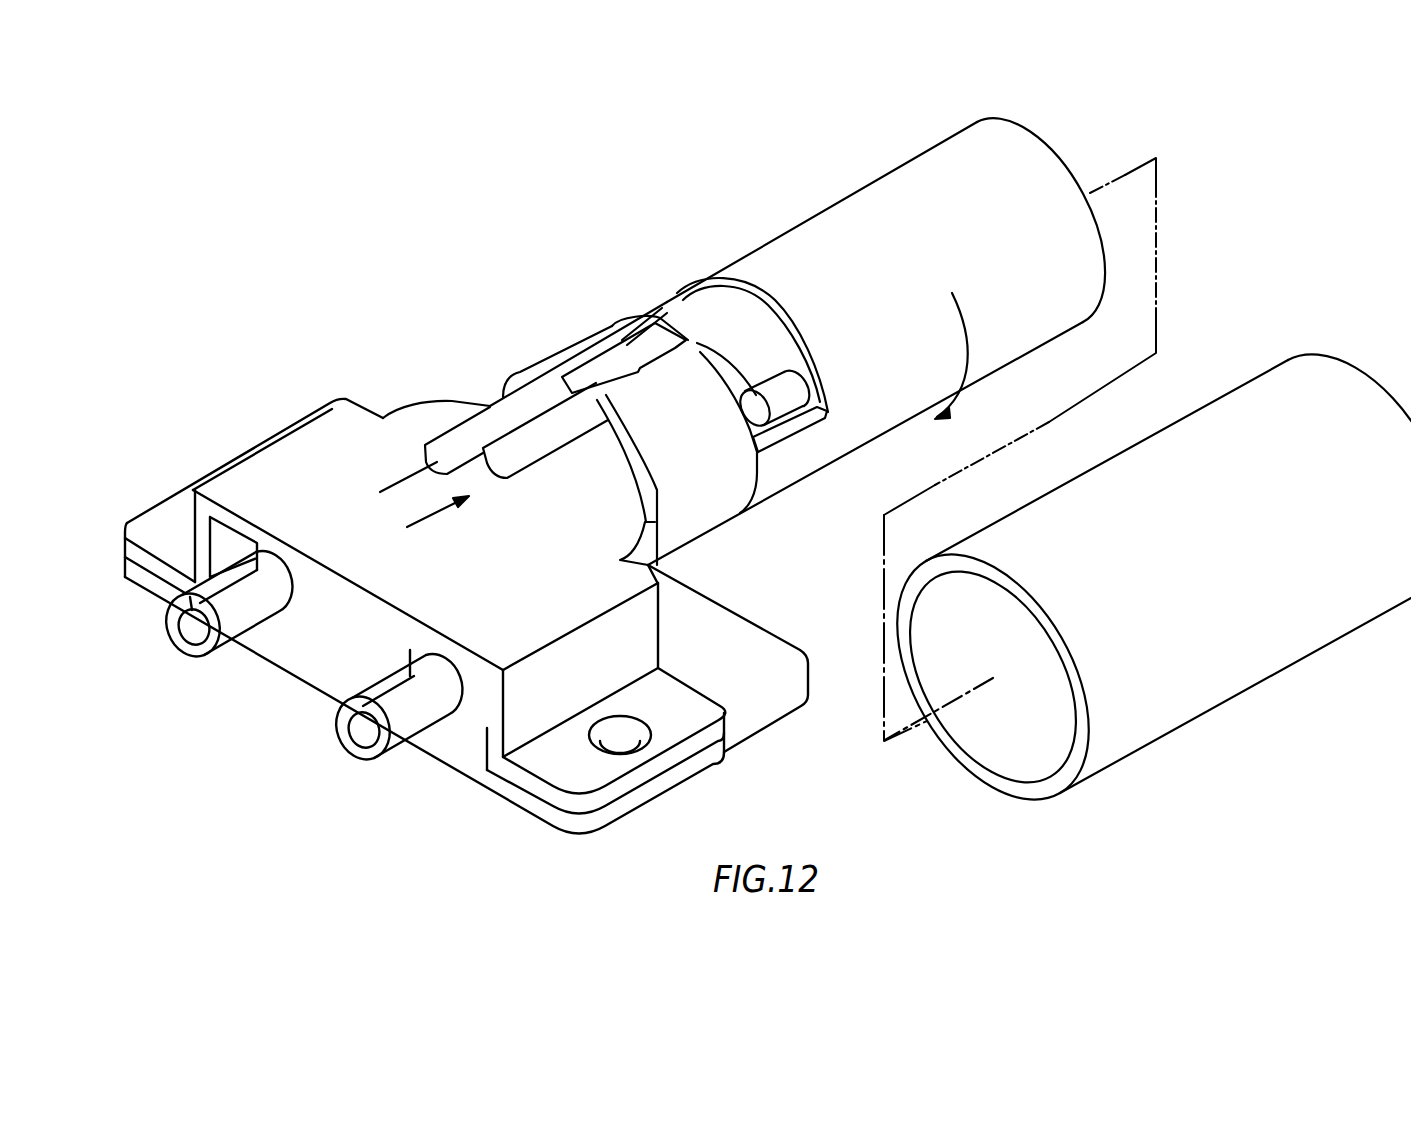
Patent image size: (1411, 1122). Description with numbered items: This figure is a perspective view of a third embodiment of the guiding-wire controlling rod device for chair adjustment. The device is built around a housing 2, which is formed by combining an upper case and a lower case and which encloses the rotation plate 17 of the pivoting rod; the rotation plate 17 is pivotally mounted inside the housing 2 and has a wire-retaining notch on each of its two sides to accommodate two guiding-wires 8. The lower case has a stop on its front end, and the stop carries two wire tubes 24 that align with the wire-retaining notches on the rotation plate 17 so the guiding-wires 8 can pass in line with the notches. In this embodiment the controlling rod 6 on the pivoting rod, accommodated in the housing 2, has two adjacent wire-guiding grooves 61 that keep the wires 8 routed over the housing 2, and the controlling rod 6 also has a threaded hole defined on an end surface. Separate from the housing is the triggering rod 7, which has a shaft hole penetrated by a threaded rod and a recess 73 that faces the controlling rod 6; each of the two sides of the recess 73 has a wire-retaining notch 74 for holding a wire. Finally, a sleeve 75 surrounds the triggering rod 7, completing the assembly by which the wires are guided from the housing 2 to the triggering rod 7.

The housing 2 is at (341, 429).
The controlling rod 6 is at (559, 361).
The triggering rod 7 is at (887, 149).
The guiding-wires 8 is at (393, 490).
The rotation plate 17 is at (657, 582).
The wire tubes 24 is at (250, 628).
The wire-guiding grooves 61 is at (611, 342).
The recess 73 is at (741, 306).
The wire-retaining notch 74 is at (778, 398).
The sleeve 75 is at (1287, 383).